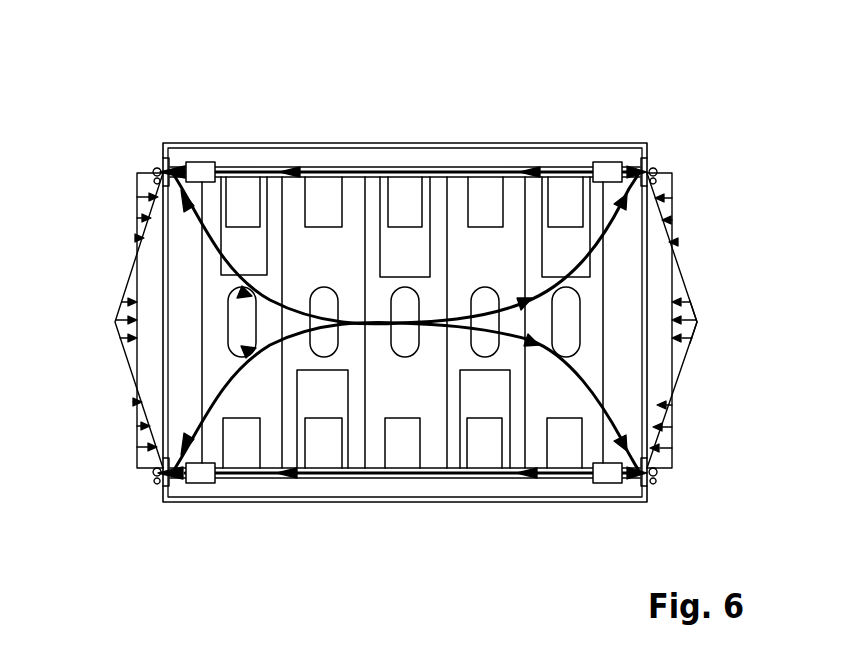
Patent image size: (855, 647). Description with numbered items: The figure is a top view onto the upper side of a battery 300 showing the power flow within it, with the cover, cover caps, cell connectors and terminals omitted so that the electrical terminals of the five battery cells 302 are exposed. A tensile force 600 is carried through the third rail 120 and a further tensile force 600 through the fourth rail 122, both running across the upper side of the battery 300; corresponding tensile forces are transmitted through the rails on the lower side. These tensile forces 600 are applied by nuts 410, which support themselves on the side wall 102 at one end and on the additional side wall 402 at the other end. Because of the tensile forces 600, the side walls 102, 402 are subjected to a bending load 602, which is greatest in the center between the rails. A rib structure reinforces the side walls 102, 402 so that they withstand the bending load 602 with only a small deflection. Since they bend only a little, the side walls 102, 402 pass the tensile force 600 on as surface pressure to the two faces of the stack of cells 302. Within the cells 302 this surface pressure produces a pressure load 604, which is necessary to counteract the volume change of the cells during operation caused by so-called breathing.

The battery 300 is at (158, 74).
The side wall 102 is at (165, 322).
The third rail 120 is at (233, 167).
The fourth rail 122 is at (233, 480).
The battery cells 302 is at (294, 193).
The nuts 410 is at (160, 152).
The tensile force 600 is at (575, 163).
The bending load 602 is at (137, 272).
The pressure load 604 is at (408, 340).
The additional side wall 402 is at (686, 326).